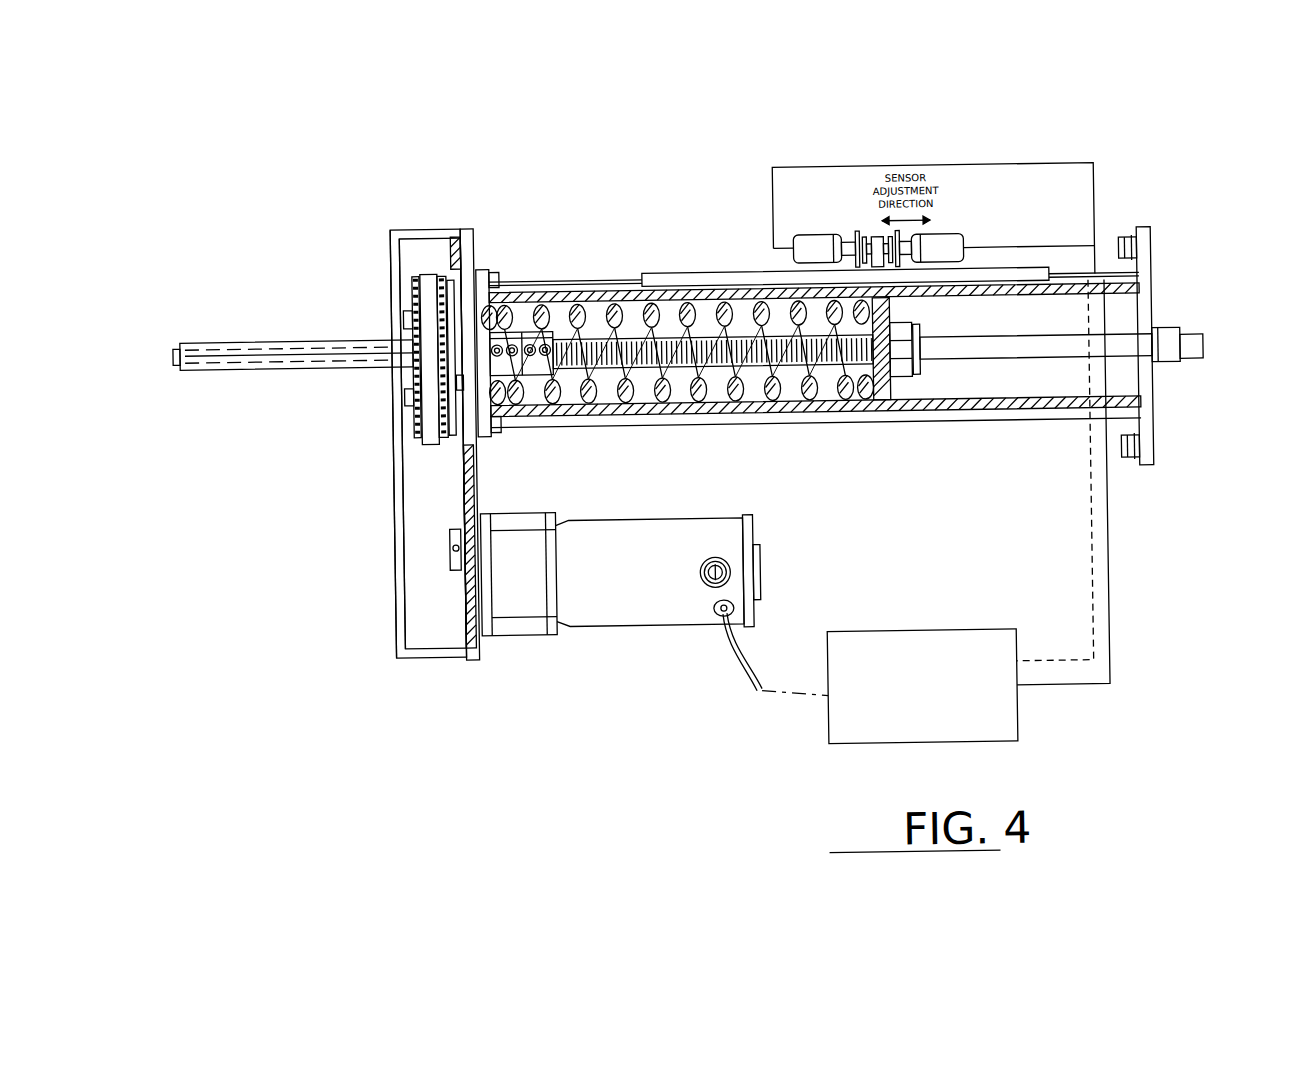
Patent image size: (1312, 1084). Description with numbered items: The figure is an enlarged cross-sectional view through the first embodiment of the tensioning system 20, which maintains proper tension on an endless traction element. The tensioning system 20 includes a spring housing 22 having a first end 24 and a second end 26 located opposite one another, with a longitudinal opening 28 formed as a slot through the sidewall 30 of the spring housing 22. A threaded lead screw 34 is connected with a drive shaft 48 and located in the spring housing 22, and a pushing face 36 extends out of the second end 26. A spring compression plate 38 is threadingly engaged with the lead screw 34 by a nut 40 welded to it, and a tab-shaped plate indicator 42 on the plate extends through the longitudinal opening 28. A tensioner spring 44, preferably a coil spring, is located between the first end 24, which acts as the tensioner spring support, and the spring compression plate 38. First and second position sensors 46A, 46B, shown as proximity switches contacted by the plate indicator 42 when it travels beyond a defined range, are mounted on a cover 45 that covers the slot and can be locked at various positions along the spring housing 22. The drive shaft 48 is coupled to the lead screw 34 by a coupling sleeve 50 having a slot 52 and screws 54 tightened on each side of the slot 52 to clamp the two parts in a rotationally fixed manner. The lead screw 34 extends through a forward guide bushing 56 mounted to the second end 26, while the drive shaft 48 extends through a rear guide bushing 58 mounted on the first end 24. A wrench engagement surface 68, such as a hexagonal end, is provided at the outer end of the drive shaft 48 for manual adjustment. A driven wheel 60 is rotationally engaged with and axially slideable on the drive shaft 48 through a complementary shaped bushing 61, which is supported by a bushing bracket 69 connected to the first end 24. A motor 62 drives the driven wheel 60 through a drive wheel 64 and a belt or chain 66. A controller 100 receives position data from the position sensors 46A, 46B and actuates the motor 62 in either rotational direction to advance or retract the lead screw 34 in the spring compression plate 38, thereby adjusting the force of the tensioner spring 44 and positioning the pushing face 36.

The tensioning system 20 is at (432, 663).
The spring housing 22 is at (598, 297).
The first end 24 is at (484, 263).
The second end 26 is at (1149, 432).
The longitudinal opening 28 is at (1066, 284).
The sidewall 30 is at (711, 411).
The threaded lead screw 34 is at (604, 331).
The pushing face 36 is at (1205, 351).
The spring compression plate 38 is at (886, 403).
The nut 40 is at (905, 379).
The plate indicator 42 is at (877, 241).
The tensioner spring 44 is at (553, 299).
The cover 45 is at (734, 269).
The first position sensor 46A is at (830, 236).
The second position sensor 46B is at (952, 235).
The drive shaft 48 is at (290, 332).
The coupling sleeve 50 is at (530, 324).
The slot 52 is at (522, 353).
The screws 54 is at (498, 349).
The forward guide bushing 56 is at (1165, 374).
The rear guide bushing 58 is at (463, 372).
The driven wheel 60 is at (414, 266).
The complementary shaped bushing 61 is at (407, 324).
The motor 62 is at (549, 633).
The drive wheel 64 is at (422, 572).
The belt or chain 66 is at (421, 487).
The wrench engagement surface 68 is at (175, 359).
The bushing bracket 69 is at (390, 474).
The controller 100 is at (872, 689).